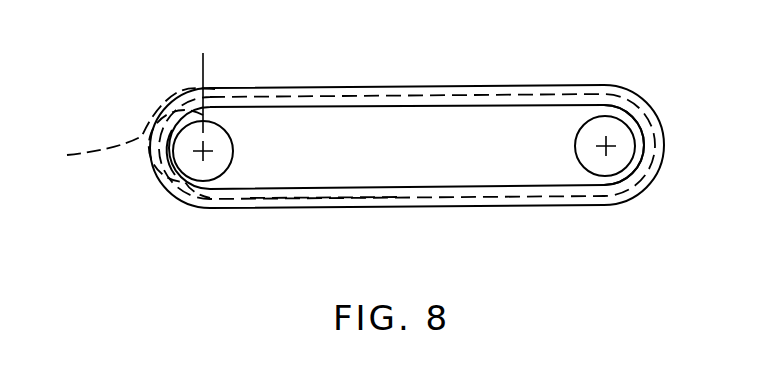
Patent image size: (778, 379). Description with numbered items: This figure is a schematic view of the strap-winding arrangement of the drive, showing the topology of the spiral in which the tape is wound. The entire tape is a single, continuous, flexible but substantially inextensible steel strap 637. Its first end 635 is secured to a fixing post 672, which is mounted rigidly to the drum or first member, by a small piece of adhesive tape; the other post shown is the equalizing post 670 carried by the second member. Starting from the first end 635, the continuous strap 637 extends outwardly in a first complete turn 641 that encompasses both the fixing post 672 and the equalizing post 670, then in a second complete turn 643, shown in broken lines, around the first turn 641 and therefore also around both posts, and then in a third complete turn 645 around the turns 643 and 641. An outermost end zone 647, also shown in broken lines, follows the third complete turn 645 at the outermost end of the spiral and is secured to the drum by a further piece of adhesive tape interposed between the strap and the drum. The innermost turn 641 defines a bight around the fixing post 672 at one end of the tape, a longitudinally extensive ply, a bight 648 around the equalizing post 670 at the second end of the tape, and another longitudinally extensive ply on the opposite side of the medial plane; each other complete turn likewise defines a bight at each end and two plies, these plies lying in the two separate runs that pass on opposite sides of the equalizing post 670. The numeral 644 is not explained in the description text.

The first end 635 is at (240, 144).
The steel strap 637 is at (365, 85).
The first complete turn 641 is at (318, 188).
The second complete turn 643 is at (292, 199).
The left end belt portion 644 is at (167, 157).
The third complete turn 645 is at (442, 206).
The outermost end zone 647 is at (142, 135).
The bight 648 is at (643, 143).
The equalizing post 670 is at (575, 149).
The fixing post 672 is at (231, 163).